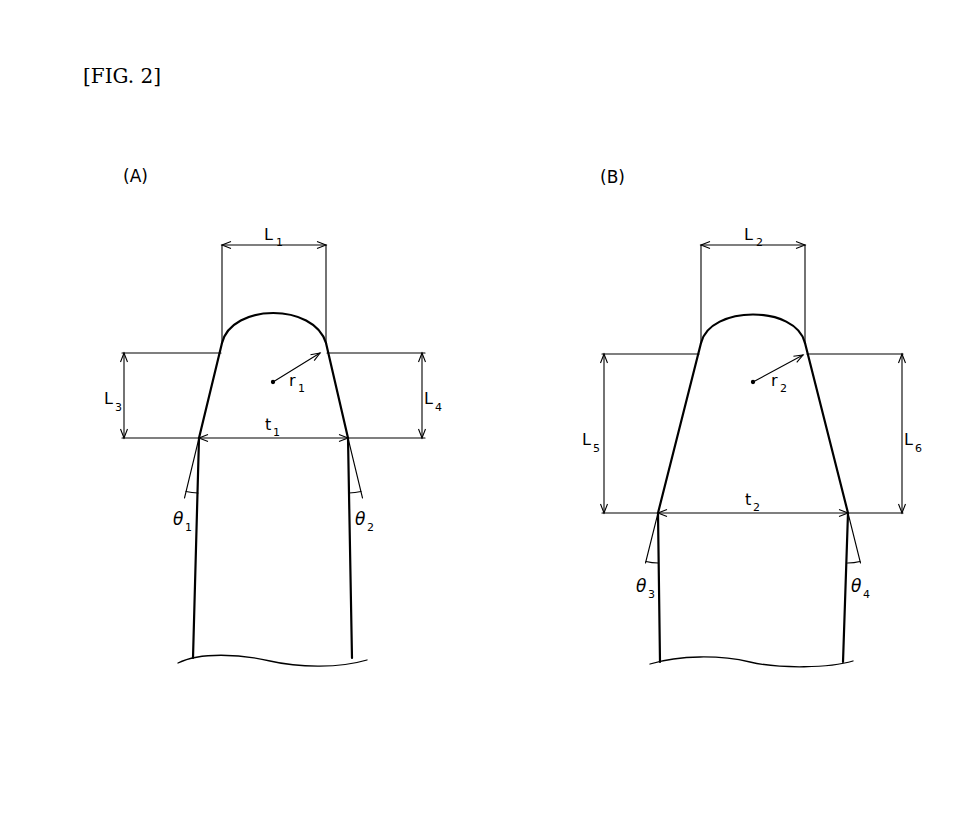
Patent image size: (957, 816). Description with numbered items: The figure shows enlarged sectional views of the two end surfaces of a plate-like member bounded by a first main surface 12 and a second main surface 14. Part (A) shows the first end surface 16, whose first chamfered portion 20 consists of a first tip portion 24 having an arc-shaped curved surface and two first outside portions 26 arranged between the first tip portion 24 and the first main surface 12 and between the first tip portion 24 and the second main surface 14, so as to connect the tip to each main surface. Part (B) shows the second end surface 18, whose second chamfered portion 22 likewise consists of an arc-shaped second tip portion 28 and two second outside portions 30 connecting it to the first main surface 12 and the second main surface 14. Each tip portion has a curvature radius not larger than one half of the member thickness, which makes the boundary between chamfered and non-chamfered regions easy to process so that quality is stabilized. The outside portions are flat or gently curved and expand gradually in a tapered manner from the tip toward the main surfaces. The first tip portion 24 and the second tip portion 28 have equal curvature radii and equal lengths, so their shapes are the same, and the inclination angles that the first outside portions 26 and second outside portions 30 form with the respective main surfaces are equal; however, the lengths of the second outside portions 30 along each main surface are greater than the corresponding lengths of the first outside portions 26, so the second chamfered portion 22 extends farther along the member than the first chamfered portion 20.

The first main surface 12 is at (193, 615).
The second main surface 14 is at (353, 617).
The first end surface 16 is at (262, 727).
The second end surface 18 is at (740, 730).
The first chamfered portion 20 is at (200, 316).
The second chamfered portion 22 is at (680, 317).
The first tip portion 24 is at (272, 313).
The first outside portions 26 is at (207, 393).
The second tip portion 28 is at (751, 313).
The second outside portions 30 is at (680, 422).